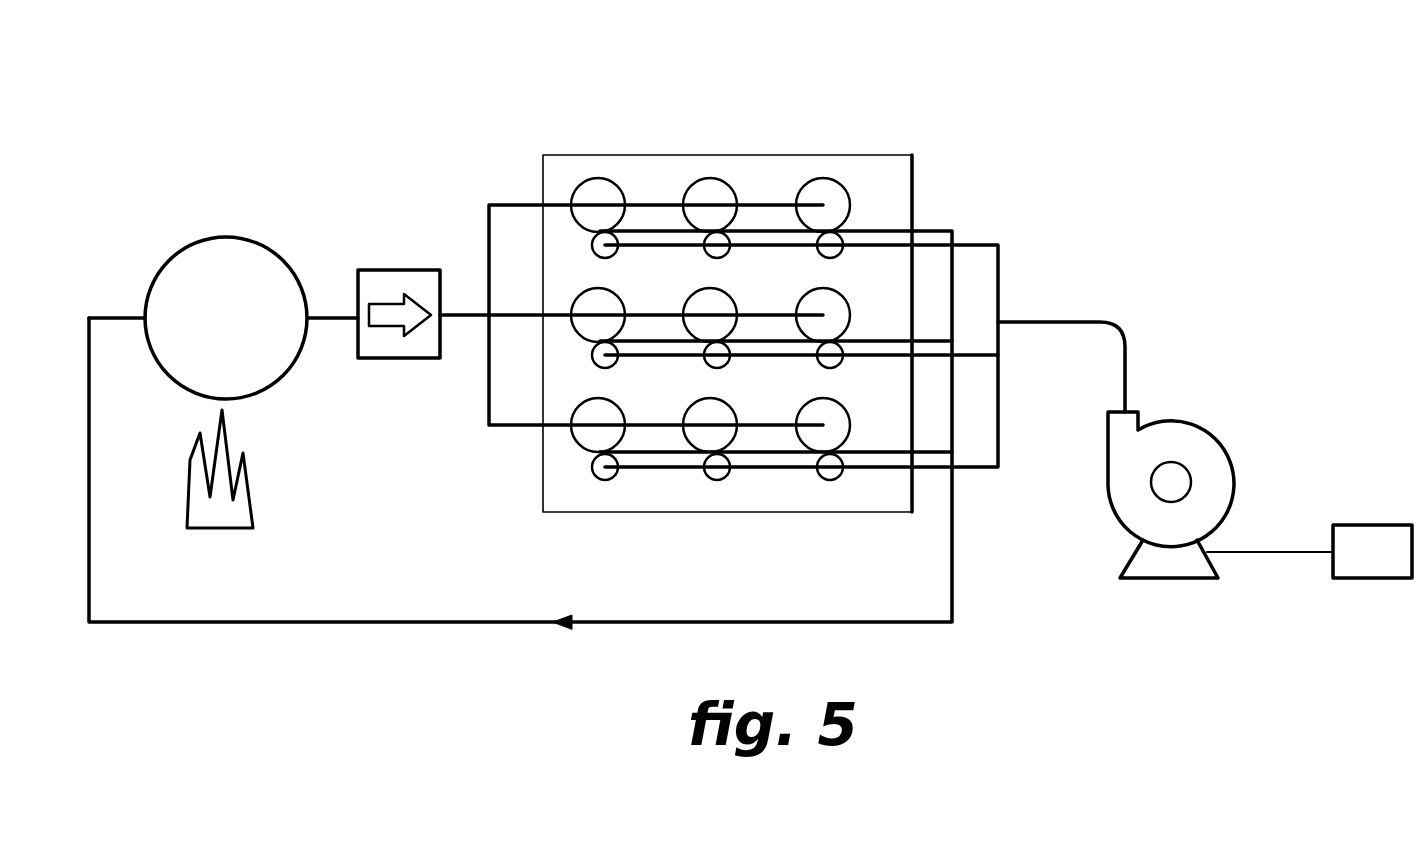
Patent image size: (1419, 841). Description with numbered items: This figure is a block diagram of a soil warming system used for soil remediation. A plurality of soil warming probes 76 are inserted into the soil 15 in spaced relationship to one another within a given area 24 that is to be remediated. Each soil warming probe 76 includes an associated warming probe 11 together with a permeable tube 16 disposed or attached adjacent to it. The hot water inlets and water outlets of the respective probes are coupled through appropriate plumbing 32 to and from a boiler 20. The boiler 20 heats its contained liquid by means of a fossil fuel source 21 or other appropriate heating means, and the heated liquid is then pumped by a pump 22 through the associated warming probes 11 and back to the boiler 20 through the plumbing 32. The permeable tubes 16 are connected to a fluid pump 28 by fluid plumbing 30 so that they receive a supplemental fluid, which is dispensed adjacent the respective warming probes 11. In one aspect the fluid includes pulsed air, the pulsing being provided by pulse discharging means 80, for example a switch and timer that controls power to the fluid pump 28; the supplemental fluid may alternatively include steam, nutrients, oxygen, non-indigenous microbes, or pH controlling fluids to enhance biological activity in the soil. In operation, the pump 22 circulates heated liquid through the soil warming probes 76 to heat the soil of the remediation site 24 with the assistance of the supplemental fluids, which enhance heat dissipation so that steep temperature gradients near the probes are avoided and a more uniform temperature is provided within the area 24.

The warming probe 11 is at (845, 193).
The soil 15 is at (562, 172).
The permeable tube 16 is at (840, 240).
The boiler 20 is at (192, 248).
The fossil fuel source 21 is at (252, 485).
The pump 22 is at (405, 270).
The area to be remediated 24 is at (595, 153).
The fluid pump 28 is at (1235, 465).
The fluid plumbing 30 is at (1120, 332).
The plumbing 32 is at (513, 430).
The soil warming probe 76 is at (733, 185).
The pulse discharging means 80 is at (1365, 525).